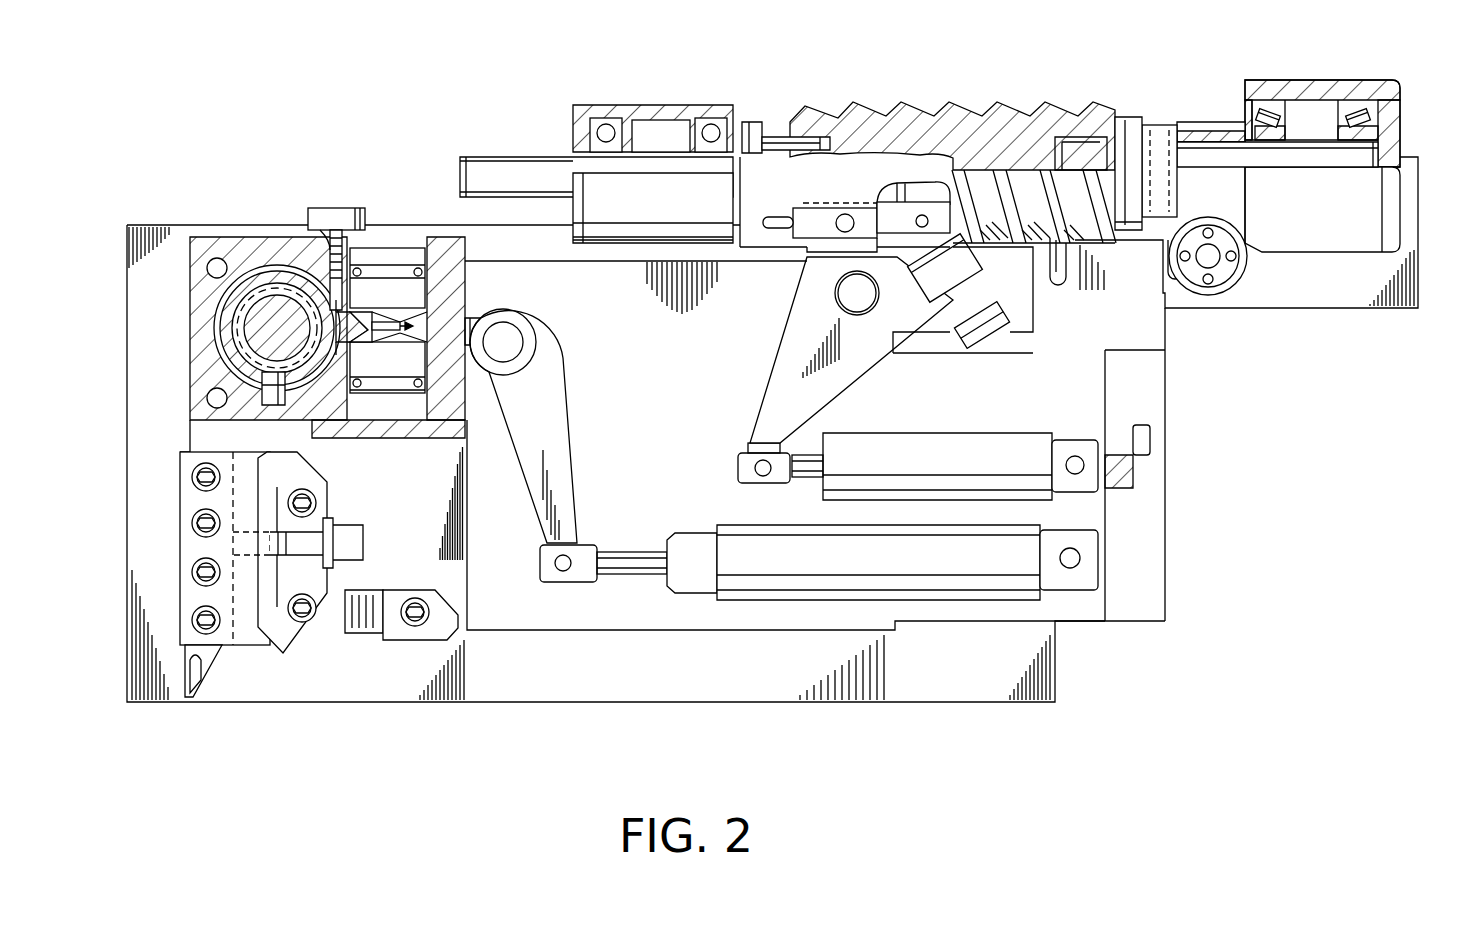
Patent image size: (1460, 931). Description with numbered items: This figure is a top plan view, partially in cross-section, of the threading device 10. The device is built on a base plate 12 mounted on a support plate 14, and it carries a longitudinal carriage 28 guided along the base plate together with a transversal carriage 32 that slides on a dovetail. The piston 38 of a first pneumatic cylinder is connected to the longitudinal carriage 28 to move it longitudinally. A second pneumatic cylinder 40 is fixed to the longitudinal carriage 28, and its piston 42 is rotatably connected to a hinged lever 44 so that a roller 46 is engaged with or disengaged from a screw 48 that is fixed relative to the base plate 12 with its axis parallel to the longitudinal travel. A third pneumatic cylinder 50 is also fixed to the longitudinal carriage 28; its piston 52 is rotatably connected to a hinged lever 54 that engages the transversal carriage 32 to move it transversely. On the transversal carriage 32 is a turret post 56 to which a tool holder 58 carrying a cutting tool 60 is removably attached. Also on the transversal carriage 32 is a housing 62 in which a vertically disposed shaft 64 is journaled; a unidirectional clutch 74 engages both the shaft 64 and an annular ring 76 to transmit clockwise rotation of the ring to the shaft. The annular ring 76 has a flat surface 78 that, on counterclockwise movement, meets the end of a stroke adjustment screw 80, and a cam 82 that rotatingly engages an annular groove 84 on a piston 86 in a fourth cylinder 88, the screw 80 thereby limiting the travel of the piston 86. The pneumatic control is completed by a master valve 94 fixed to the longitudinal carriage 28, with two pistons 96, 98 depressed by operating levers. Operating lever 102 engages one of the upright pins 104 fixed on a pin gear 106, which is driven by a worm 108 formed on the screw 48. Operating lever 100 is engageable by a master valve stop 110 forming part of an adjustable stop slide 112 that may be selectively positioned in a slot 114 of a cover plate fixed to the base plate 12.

The threading device 10 is at (1368, 604).
The base plate 12 is at (1000, 690).
The support plate 14 is at (1155, 548).
The longitudinal carriage 28 is at (500, 625).
The transversal carriage 32 is at (205, 437).
The piston 38 is at (1150, 445).
The second pneumatic cylinder 40 is at (1030, 443).
The piston 42 is at (802, 478).
The hinged lever 44 is at (782, 368).
The roller 46 is at (955, 245).
The screw 48 is at (950, 110).
The third pneumatic cylinder 50 is at (738, 592).
The piston 52 is at (625, 562).
The hinged lever 54 is at (560, 480).
The turret post 56 is at (328, 625).
The tool holder 58 is at (190, 553).
The cutting tool 60 is at (190, 660).
The housing 62 is at (232, 250).
The shaft 64 is at (283, 307).
The unidirectional clutch 74 is at (240, 335).
The annular ring 76 is at (235, 300).
The flat surface 78 is at (338, 330).
The stroke adjustment screw 80 is at (336, 217).
The cam 82 is at (362, 318).
The annular groove 84 is at (472, 318).
The piston 86 is at (420, 318).
The fourth cylinder 88 is at (402, 262).
The master valve 94 is at (1100, 282).
The piston 96 is at (1062, 262).
The piston 98 is at (1170, 250).
The operating lever 100 is at (1058, 258).
The operating lever 102 is at (1173, 280).
The upright pins 104 is at (1211, 281).
The pin gear 106 is at (1208, 238).
The worm 108 is at (1200, 238).
The master valve stop 110 is at (897, 245).
The adjustable stop slide 112 is at (862, 208).
The slot 114 is at (778, 217).